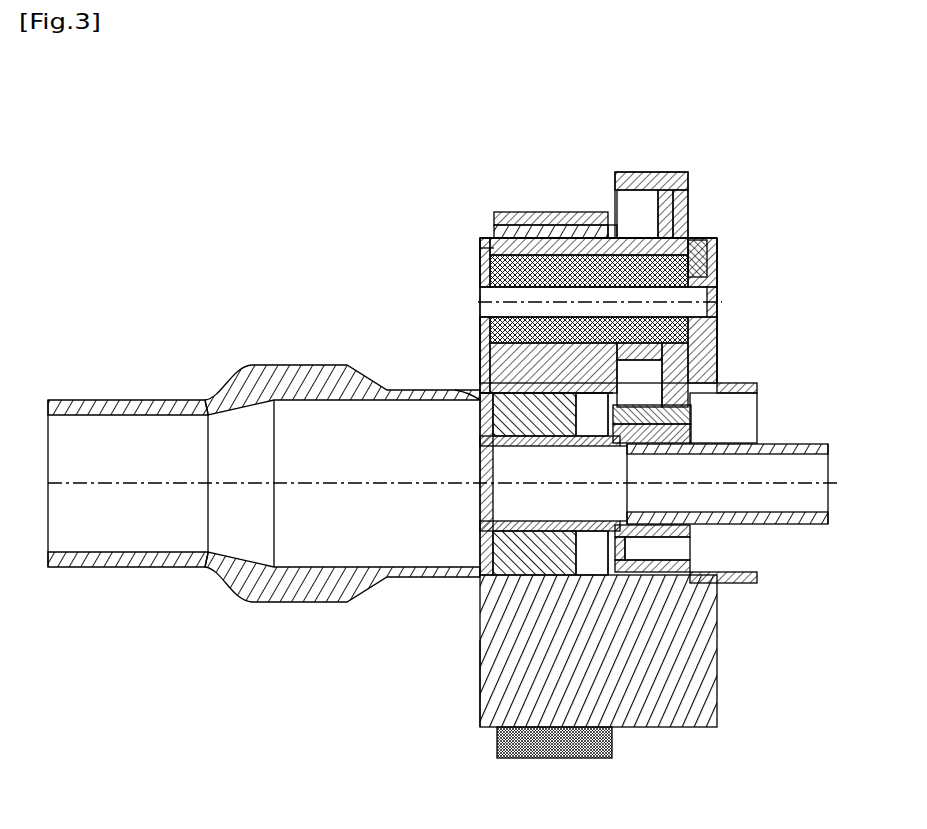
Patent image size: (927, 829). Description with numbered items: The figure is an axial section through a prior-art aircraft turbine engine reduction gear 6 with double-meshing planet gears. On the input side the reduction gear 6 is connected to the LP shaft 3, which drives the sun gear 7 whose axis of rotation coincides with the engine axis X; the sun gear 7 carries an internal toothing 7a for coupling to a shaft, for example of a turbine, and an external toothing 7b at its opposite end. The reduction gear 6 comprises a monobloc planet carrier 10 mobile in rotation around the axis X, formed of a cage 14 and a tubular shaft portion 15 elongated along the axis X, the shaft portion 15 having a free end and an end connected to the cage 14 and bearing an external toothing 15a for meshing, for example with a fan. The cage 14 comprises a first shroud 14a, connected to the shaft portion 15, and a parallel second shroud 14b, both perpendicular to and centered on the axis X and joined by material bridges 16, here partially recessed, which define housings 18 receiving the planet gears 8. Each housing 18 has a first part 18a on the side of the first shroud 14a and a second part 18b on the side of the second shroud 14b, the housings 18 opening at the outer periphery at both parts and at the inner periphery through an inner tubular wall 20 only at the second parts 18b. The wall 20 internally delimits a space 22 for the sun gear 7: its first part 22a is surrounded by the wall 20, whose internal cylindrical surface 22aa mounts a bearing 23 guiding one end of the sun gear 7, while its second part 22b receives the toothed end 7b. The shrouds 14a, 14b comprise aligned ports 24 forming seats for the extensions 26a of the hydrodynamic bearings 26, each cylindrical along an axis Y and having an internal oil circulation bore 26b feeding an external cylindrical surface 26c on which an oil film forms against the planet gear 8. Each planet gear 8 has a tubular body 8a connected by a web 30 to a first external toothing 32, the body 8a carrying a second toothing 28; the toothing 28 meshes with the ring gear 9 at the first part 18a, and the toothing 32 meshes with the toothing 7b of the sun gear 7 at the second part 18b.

The LP shaft 3 is at (790, 526).
The reduction gear 6 is at (752, 127).
The sun gear 7 is at (722, 582).
The internal toothing 7a is at (760, 395).
The external toothing 7b is at (700, 540).
The planet gear 8 is at (662, 165).
The tubular body 8a is at (480, 245).
The ring gear 9 is at (522, 228).
The planet carrier 10 is at (730, 238).
The cage 14 is at (708, 728).
The first shroud 14a is at (478, 265).
The second shroud 14b is at (720, 342).
The shaft portion 15 is at (150, 568).
The external toothing 15a is at (318, 603).
The material bridge 16 is at (640, 738).
The housing 18 is at (569, 258).
The first part of housing 18a is at (497, 245).
The second part of housing 18b is at (718, 276).
The inner tubular wall 20 is at (478, 360).
The space 22 is at (580, 530).
The first part of space 22a is at (490, 565).
The bearing seat 22aa is at (465, 392).
The second part of space 22b is at (620, 565).
The bearing 23 is at (483, 705).
The port 24 is at (478, 286).
The hydrodynamic bearing 26 is at (696, 248).
The extension 26a is at (478, 320).
The internal oil circulation bore 26b is at (634, 232).
The external cylindrical surface 26c is at (602, 238).
The second toothing 28 is at (548, 216).
The web 30 is at (672, 200).
The first external toothing 32 is at (678, 192).
The axis of rotation X is at (840, 481).
The axis Y is at (712, 240).